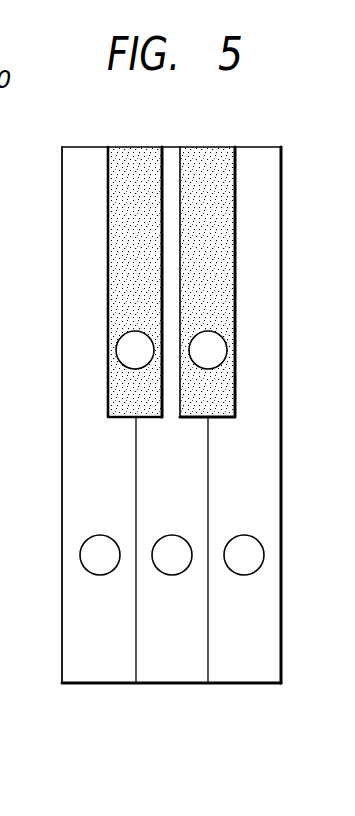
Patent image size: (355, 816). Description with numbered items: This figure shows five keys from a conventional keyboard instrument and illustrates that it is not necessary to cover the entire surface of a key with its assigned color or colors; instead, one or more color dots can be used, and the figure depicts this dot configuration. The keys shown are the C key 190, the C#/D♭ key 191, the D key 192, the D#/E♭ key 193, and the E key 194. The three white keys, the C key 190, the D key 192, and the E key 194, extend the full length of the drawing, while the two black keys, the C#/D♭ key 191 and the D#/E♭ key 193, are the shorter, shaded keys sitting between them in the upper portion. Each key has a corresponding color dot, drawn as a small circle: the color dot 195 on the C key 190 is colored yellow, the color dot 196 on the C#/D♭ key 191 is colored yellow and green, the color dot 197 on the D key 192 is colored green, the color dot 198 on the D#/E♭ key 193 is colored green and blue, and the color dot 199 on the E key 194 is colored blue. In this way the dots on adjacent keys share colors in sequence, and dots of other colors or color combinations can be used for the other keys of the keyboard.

The C key 190 is at (90, 662).
The C#/D♭ key 191 is at (133, 153).
The D key 192 is at (170, 667).
The D#/E♭ key 193 is at (207, 153).
The E key 194 is at (260, 667).
The color dot 195 is at (100, 555).
The color dot 196 is at (135, 350).
The color dot 197 is at (172, 555).
The color dot 198 is at (208, 350).
The color dot 199 is at (244, 555).